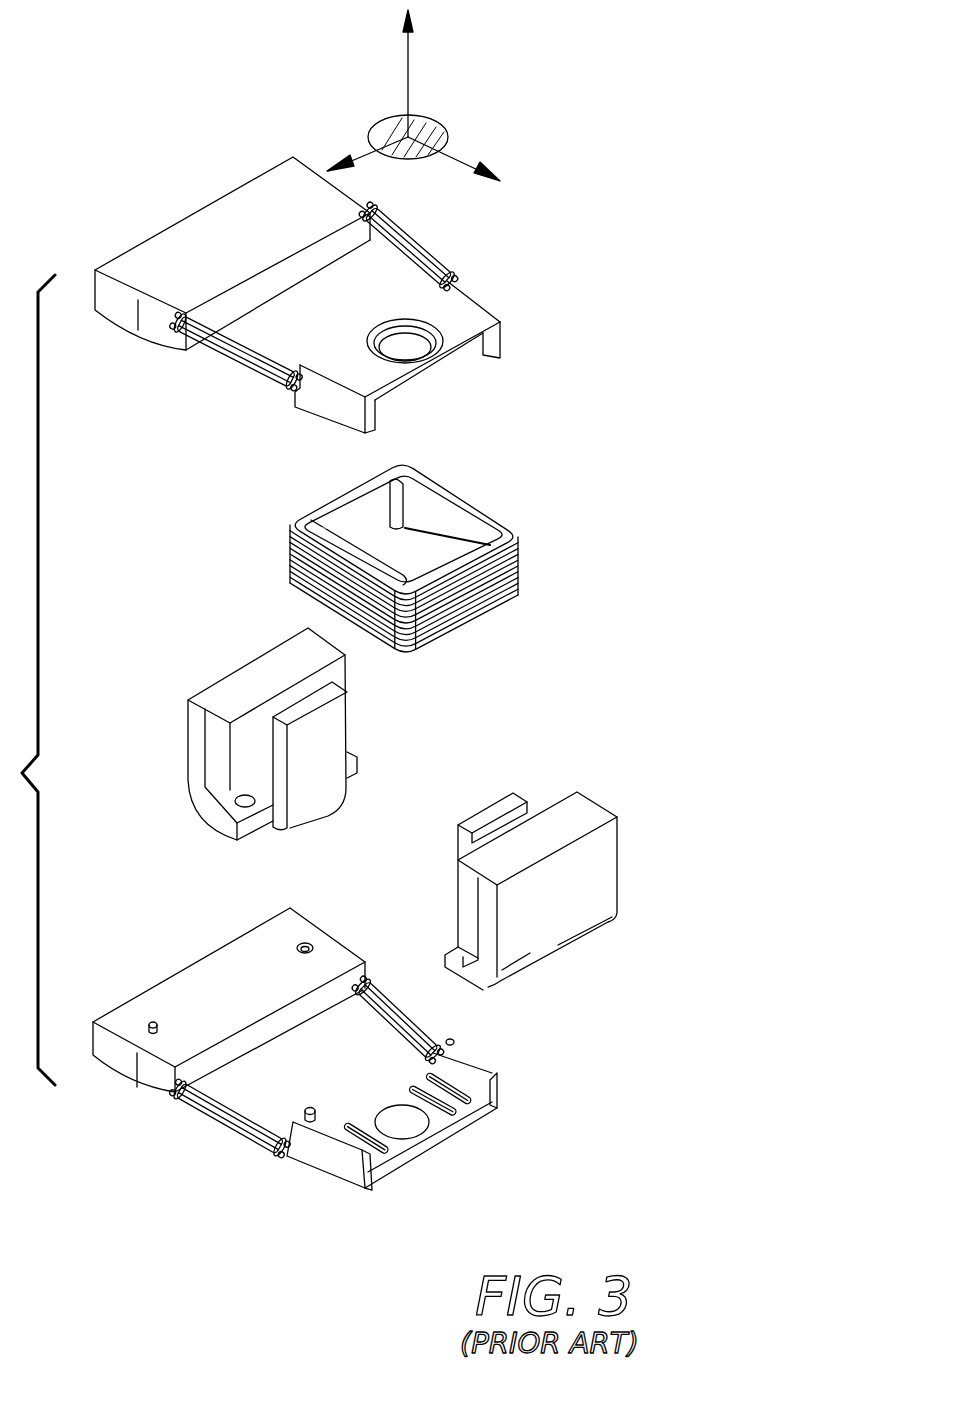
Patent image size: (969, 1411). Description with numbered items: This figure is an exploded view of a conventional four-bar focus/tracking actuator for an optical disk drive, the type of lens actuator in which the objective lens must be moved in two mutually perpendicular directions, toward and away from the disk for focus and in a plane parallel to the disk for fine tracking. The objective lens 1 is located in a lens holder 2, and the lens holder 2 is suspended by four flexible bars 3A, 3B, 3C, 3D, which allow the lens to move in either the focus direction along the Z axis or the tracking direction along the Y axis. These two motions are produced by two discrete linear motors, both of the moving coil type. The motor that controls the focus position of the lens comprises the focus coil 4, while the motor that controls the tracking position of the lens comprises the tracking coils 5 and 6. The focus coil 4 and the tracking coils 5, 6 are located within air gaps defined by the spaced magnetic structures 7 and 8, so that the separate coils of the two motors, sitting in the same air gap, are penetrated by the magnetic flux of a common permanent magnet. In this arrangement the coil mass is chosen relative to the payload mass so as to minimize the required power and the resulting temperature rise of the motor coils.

The objective lens 1 is at (450, 115).
The lens holder 2 is at (497, 309).
The flexible bar 3A is at (218, 1123).
The flexible bar 3B is at (220, 355).
The flexible bar 3C is at (427, 248).
The flexible bar 3D is at (417, 1012).
The focus coil 4 is at (520, 522).
The tracking coil 5 is at (450, 500).
The tracking coil 6 is at (343, 530).
The magnetic structure 7 is at (590, 770).
The magnetic structure 8 is at (250, 652).